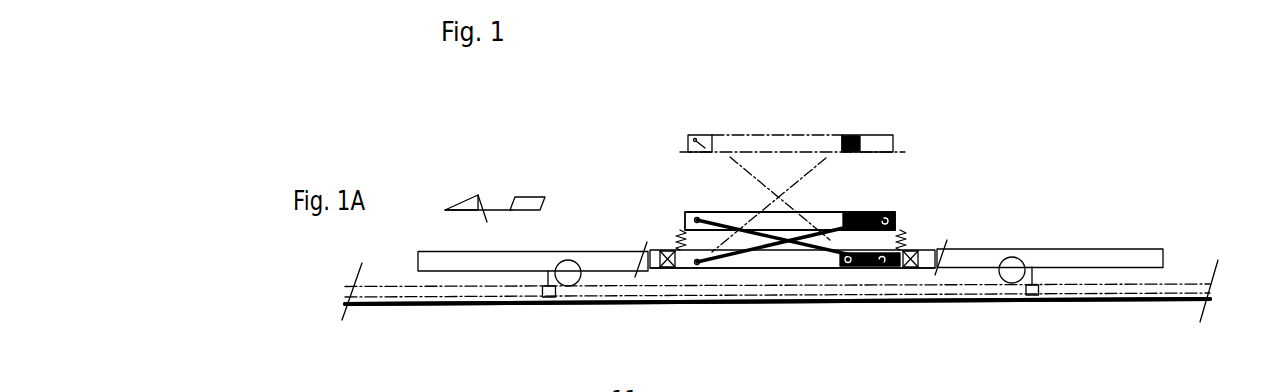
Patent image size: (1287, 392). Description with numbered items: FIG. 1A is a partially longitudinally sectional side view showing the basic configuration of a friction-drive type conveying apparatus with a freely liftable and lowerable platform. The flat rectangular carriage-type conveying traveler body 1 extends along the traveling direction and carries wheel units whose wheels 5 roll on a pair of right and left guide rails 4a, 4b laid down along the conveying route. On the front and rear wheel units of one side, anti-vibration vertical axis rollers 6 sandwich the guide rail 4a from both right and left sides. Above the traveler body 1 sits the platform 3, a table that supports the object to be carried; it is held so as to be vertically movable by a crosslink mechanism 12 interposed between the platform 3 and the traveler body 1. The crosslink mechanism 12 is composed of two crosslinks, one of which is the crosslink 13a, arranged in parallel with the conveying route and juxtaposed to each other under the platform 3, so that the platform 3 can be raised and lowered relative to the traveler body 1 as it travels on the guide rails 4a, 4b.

The conveying traveler body 1 is at (1100, 248).
The platform 3 is at (822, 212).
The crosslink mechanism 12 is at (715, 212).
The crosslink 13a is at (812, 262).
The wheel 5 is at (571, 283).
The anti-vibration vertical axis roller 6 is at (548, 298).
The guide rail 4a is at (1153, 284).
The guide rail 4b is at (777, 301).